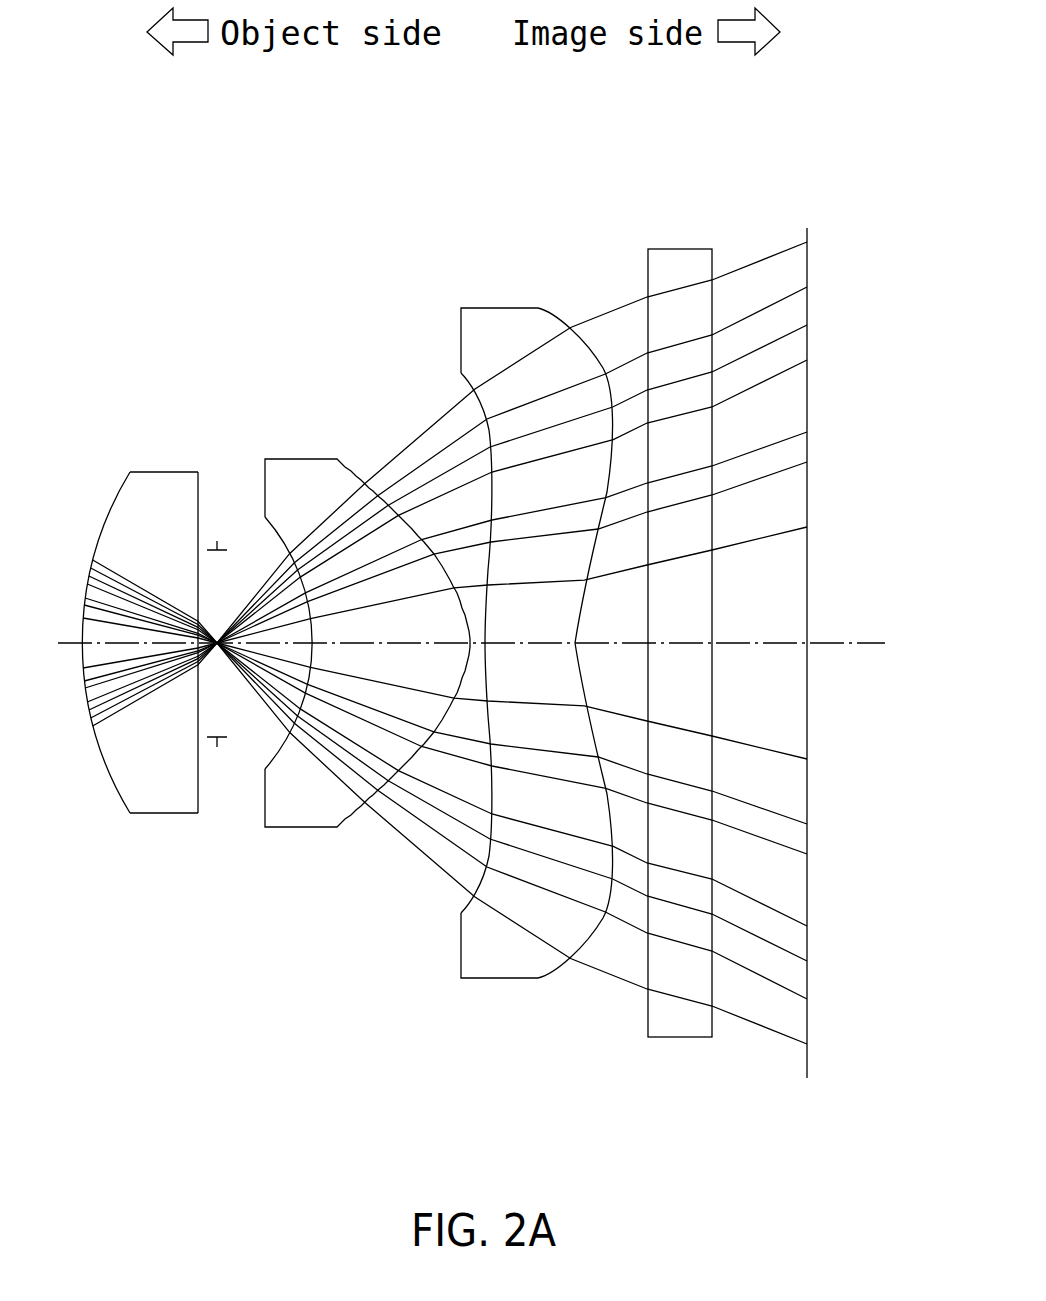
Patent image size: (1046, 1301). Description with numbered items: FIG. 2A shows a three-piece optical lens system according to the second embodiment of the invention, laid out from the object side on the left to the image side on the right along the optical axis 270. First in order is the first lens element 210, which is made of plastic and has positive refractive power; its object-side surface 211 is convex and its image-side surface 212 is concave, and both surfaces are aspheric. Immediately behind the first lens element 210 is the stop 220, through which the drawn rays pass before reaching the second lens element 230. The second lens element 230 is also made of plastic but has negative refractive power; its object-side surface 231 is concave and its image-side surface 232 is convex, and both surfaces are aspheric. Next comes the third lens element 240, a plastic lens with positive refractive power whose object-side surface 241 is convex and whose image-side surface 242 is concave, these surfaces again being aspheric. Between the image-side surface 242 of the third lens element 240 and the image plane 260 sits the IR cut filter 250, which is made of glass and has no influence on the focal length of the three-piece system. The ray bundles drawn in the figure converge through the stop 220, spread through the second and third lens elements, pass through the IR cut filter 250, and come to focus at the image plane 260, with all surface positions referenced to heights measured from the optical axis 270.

The first lens element 210 is at (143, 669).
The object-side surface 211 is at (113, 783).
The image-side surface 212 is at (198, 785).
The stop 220 is at (217, 522).
The second lens element 230 is at (366, 663).
The object-side surface 231 is at (270, 755).
The image-side surface 232 is at (492, 792).
The third lens element 240 is at (527, 655).
The object-side surface 241 is at (478, 792).
The image-side surface 242 is at (608, 810).
The IR cut filter 250 is at (673, 238).
The image plane 260 is at (802, 212).
The optical axis 270 is at (818, 637).